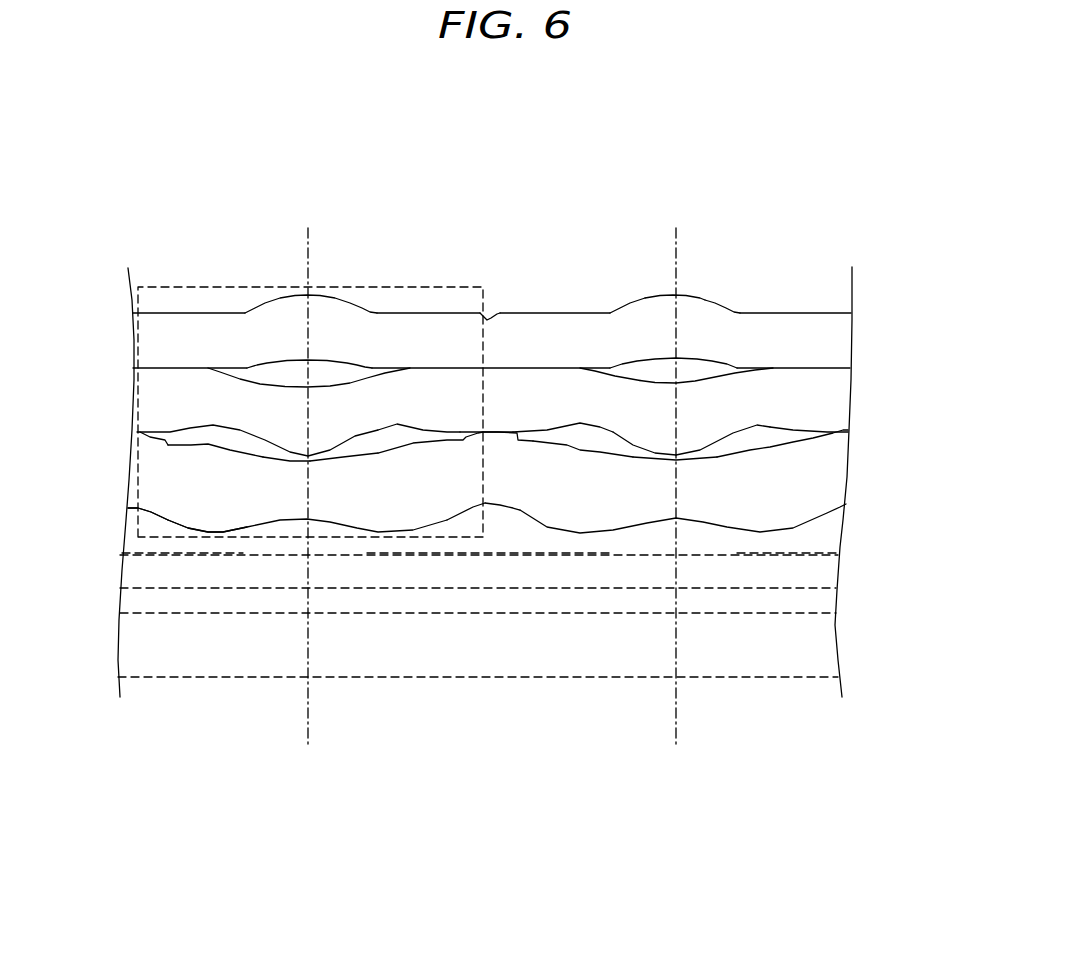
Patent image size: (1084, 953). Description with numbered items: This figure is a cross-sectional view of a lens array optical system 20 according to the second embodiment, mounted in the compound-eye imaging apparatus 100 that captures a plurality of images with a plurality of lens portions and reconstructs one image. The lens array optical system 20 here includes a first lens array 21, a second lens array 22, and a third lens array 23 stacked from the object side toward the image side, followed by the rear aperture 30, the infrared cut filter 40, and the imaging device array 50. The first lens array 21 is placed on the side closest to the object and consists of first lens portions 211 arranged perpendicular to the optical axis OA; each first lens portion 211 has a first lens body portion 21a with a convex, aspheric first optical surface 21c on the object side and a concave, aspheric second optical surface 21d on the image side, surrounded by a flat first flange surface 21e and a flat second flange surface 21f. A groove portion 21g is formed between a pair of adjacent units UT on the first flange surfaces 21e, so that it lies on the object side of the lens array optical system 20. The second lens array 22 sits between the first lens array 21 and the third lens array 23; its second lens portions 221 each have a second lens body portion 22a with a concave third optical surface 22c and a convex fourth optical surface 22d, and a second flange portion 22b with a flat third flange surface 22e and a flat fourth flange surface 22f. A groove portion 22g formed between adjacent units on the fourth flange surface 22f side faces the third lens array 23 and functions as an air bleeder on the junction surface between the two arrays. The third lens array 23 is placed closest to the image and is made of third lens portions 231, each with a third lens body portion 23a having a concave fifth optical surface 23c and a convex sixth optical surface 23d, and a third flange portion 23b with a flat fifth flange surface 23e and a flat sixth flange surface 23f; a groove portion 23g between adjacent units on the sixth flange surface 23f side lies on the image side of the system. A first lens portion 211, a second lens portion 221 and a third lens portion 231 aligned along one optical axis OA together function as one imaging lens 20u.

The imaging apparatus 100 is at (915, 188).
The lens array optical system 20 is at (170, 299).
The imaging lens 20u is at (187, 282).
The first lens array 21 is at (843, 342).
The first lens portion 211 is at (300, 323).
The first lens body portion 21a is at (633, 327).
The first optical surface 21c is at (637, 298).
The second optical surface 21d is at (707, 363).
The first flange surface 21e is at (800, 313).
The second flange surface 21f is at (790, 381).
The groove portion 21g is at (492, 317).
The second lens array 22 is at (845, 415).
The second lens portion 221 is at (273, 400).
The second lens body portion 22a is at (328, 420).
The second flange portion 22b is at (150, 395).
The third optical surface 22c is at (686, 390).
The fourth optical surface 22d is at (635, 447).
The third flange surface 22e is at (553, 378).
The fourth flange surface 22f is at (852, 442).
The groove portion 22g is at (483, 432).
The third lens array 23 is at (835, 478).
The third lens portion 231 is at (290, 493).
The third lens body portion 23a is at (202, 508).
The third flange portion 23b is at (145, 467).
The fifth optical surface 23c is at (318, 460).
The sixth optical surface 23d is at (243, 528).
The fifth flange surface 23e is at (140, 432).
The sixth flange surface 23f is at (475, 497).
The groove portion 23g is at (480, 507).
The rear aperture 30 is at (840, 547).
The infrared cut filter 40 is at (833, 573).
The imaging device array 50 is at (825, 650).
The optical axis OA is at (310, 717).
The unit UT is at (373, 230).